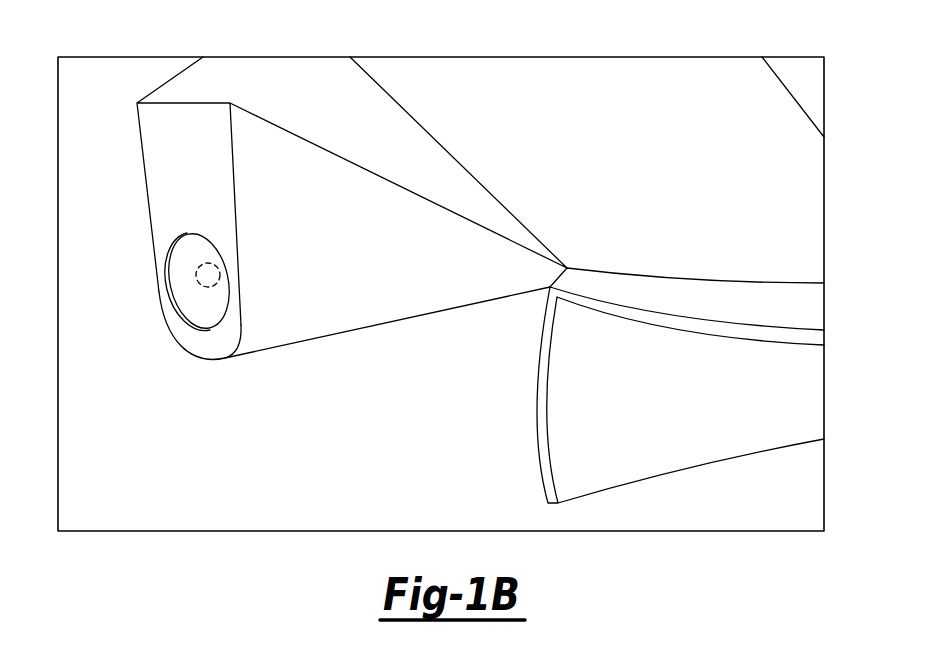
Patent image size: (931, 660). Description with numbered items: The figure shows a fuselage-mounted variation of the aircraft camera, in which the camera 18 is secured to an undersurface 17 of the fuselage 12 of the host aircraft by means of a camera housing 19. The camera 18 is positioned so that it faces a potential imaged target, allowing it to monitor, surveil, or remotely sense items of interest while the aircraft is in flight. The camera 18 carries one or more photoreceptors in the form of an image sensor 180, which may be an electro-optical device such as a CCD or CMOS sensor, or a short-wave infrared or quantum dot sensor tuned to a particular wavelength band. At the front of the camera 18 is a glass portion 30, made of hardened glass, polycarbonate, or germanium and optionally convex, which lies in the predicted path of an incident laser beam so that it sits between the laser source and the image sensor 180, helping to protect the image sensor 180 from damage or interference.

The fuselage 12 is at (732, 90).
The undersurface of the fuselage 17 is at (744, 164).
The camera 18 is at (160, 350).
The camera housing 19 is at (335, 253).
The glass portion 30 is at (170, 262).
The image sensor 180 is at (187, 298).